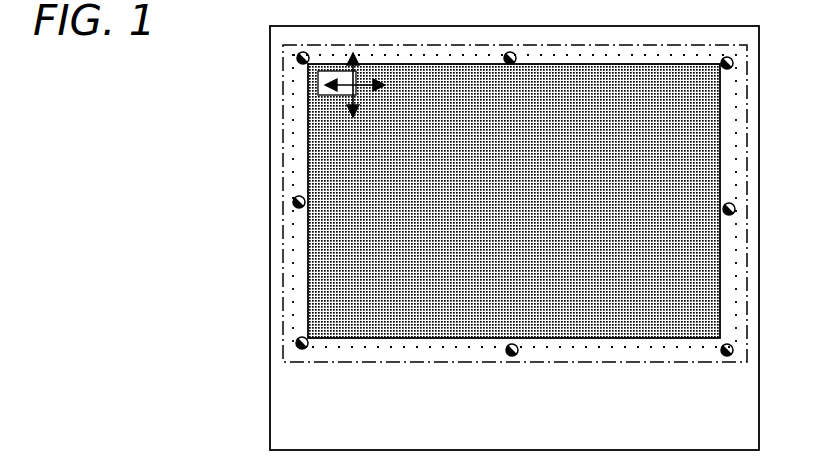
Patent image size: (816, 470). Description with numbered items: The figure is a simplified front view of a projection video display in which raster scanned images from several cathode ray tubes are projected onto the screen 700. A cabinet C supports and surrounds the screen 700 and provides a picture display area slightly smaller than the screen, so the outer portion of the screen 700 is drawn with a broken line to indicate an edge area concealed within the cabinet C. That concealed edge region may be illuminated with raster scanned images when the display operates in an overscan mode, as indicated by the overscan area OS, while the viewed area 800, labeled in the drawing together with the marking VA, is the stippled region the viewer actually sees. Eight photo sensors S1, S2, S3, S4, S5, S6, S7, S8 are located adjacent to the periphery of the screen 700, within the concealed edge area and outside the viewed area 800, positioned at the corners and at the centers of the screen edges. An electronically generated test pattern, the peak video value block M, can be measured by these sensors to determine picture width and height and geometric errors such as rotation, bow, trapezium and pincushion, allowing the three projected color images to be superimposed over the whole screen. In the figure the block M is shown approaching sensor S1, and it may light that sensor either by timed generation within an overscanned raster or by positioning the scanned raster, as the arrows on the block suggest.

The cabinet C is at (283, 385).
The screen 700 is at (284, 134).
The overscan area OS is at (297, 287).
The visible area VA is at (469, 201).
The viewed area 800 is at (325, 237).
The peak video value block M is at (322, 86).
The sensor S1 is at (319, 53).
The sensor S2 is at (495, 55).
The sensor S3 is at (711, 58).
The sensor S4 is at (736, 196).
The sensor S5 is at (735, 336).
The sensor S6 is at (528, 357).
The sensor S7 is at (317, 351).
The sensor S8 is at (293, 192).